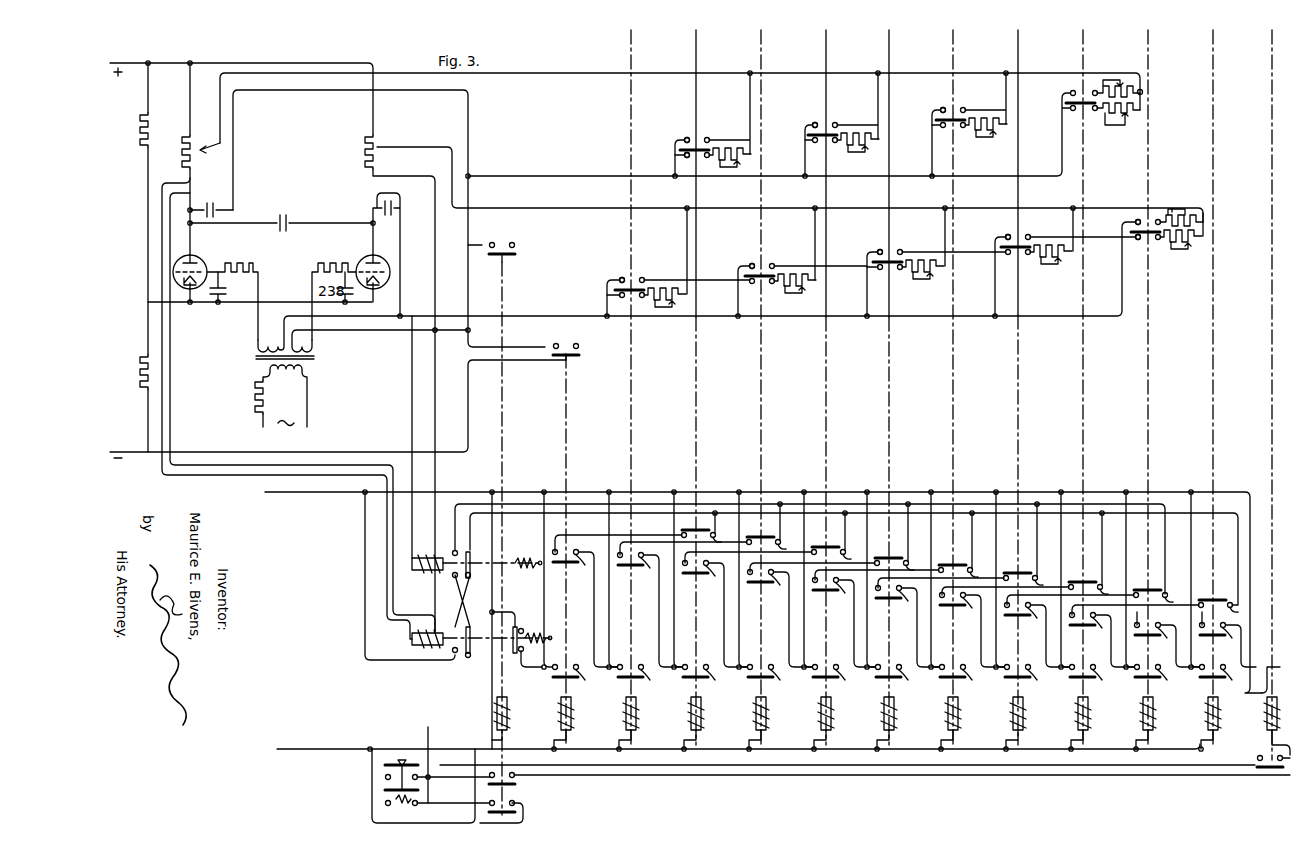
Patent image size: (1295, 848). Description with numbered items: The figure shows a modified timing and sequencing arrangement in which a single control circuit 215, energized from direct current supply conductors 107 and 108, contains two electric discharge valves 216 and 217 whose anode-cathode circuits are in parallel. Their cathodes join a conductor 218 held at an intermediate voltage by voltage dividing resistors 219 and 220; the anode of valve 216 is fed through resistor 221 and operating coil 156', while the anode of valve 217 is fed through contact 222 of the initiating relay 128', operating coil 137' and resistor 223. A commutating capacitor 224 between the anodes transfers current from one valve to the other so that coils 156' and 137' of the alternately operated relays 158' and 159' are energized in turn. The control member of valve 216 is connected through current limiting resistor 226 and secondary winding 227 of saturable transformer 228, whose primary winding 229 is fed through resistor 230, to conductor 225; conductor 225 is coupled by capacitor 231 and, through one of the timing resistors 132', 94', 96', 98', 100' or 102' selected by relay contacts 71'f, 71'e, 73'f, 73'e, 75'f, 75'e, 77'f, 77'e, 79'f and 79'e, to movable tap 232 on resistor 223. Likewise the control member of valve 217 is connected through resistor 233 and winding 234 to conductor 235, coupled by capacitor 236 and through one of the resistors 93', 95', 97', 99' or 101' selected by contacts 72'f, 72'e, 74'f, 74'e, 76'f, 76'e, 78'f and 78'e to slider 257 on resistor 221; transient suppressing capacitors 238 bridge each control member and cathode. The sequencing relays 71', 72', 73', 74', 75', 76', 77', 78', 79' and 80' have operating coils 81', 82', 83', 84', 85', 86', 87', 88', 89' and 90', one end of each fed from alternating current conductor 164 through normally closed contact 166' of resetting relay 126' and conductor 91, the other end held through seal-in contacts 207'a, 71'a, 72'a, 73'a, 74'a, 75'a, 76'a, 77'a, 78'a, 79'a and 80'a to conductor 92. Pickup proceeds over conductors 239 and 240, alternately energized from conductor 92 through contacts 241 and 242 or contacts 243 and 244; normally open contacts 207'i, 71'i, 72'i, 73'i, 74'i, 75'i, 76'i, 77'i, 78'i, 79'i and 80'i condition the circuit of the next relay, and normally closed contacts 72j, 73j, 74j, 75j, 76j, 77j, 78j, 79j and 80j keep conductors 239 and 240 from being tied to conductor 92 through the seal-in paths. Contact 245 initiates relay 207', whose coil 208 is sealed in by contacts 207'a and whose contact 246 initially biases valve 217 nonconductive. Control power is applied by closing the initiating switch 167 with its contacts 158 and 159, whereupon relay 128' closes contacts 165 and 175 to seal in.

The direct current control voltage supply conductor 107 is at (222, 70).
The direct current control voltage supply conductor 108 is at (196, 452).
The control circuit 215 is at (307, 180).
The electric discharge valve 216 is at (197, 260).
The electric discharge valve 217 is at (366, 260).
The conductor 218 is at (214, 306).
The voltage dividing resistor 219 is at (155, 128).
The voltage dividing resistor 220 is at (138, 372).
The resistor 221 is at (198, 160).
The normally open contact 222 is at (515, 246).
The resistor 223 is at (378, 157).
The commutating capacitor 224 is at (283, 231).
The conductor 225 is at (530, 316).
The current limiting resistor 226 is at (240, 262).
The secondary winding 227 is at (693, 287).
The transformer 228 is at (316, 357).
The primary winding 229 is at (290, 372).
The resistor 230 is at (258, 395).
The capacitor 231 is at (375, 206).
The movable tap 232 is at (378, 144).
The current limiting resistor 233 is at (330, 262).
The secondary winding 234 is at (306, 338).
The conductor 235 is at (568, 166).
The capacitor 236 is at (216, 213).
The transient suppressing capacitor 238 is at (226, 290).
The conductor 239 is at (590, 504).
The conductor 240 is at (652, 513).
The normally open contact 241 is at (452, 545).
The normally closed contact 242 is at (462, 663).
The normally closed contact 243 is at (470, 552).
The normally open contact 244 is at (452, 654).
The normally closed contact 245 is at (520, 626).
The normally closed contact 246 is at (580, 350).
The tap conductor 257 is at (214, 130).
The alternating current supply conductor 92 is at (300, 492).
The alternating current supply conductor 91 is at (590, 749).
The conductor 164 is at (318, 749).
The normally open contact 165 is at (514, 777).
The normally open contact 175 is at (514, 803).
The initiating switch 167 is at (400, 757).
The contact 158 is at (418, 785).
The contact 159 is at (418, 807).
The normally closed contact 166' is at (1266, 778).
The resetting relay 126' is at (1250, 395).
The initiating relay 128' is at (522, 538).
The relay 207' is at (587, 549).
The operating coil 208 is at (571, 714).
The operating coil 137' is at (420, 459).
The relay winding 156' is at (407, 645).
The contact blade 158' is at (483, 653).
The contact blade 159' is at (477, 600).
The resistor 132' is at (676, 257).
The sequencing relay 71' is at (647, 387).
The sequencing relay 72' is at (713, 531).
The sequencing relay 73' is at (777, 387).
The sequencing relay 74' is at (842, 531).
The sequencing relay 75' is at (905, 531).
The sequencing relay 76' is at (969, 387).
The sequencing relay 77' is at (1034, 530).
The sequencing relay 78' is at (1099, 387).
The sequencing relay 79' is at (1164, 387).
The sequencing relay 80' is at (1229, 387).
The operating coil 81' is at (640, 724).
The relay winding 82' is at (705, 724).
The relay winding 83' is at (770, 724).
The relay winding 84' is at (835, 724).
The relay winding 85' is at (898, 724).
The relay winding 86' is at (962, 724).
The relay winding 87' is at (1027, 724).
The relay winding 88' is at (1092, 724).
The relay winding 89' is at (1157, 724).
The relay winding 90' is at (1222, 724).
The resistor 93' is at (715, 120).
The resistor 94' is at (806, 250).
The resistor 95' is at (843, 112).
The resistor 96' is at (934, 243).
The resistor 97' is at (971, 105).
The resistor 98' is at (1061, 236).
The resistor 99' is at (1119, 121).
The resistor 100' is at (1169, 240).
The resistor 101' is at (1139, 88).
The resistor 102' is at (1189, 209).
The relay contact 71'f is at (603, 287).
The relay contact 71'e is at (596, 299).
The relay contact 72'f is at (667, 149).
The relay contact 72'e is at (664, 159).
The relay contact 73'f is at (732, 279).
The relay contact 73'e is at (725, 287).
The relay contact 74'f is at (796, 139).
The relay contact 74'e is at (791, 149).
The relay contact 75'f is at (860, 272).
The relay contact 75'e is at (853, 274).
The relay contact 76'f is at (923, 132).
The relay contact 76'e is at (918, 134).
The relay contact 77'f is at (988, 265).
The relay contact 77'e is at (982, 261).
The relay contact 78'f is at (1053, 83).
The relay contact 78'e is at (1060, 116).
The relay contact 79'f is at (1117, 212).
The relay contact 79'e is at (1115, 245).
The normally open contact 207'i is at (618, 601).
The sealing-in contact 207'a is at (575, 592).
The normally open i contact 71'i is at (683, 604).
The seal-in a contact 71'a is at (636, 592).
The normally open i contact 72'i is at (748, 609).
The seal-in a contact 72'a is at (701, 592).
The normally open i contact 73'i is at (812, 615).
The seal-in a contact 73'a is at (766, 592).
The normally open i contact 74'i is at (876, 618).
The seal-in a contact 74'a is at (831, 592).
The normally open i contact 75'i is at (940, 622).
The seal-in a contact 75'a is at (894, 592).
The normally open i contact 76'i is at (1005, 627).
The seal-in a contact 76'a is at (958, 592).
The normally open i contact 77'i is at (1070, 631).
The seal-in a contact 77'a is at (1023, 592).
The normally open i contact 78'i is at (1135, 636).
The seal-in a contact 78'a is at (1088, 592).
The normally open i contact 79'i is at (1167, 639).
The seal-in a contact 79'a is at (1153, 592).
The normally open i contact 80'i is at (1228, 639).
The seal-in a contact 80'a is at (1216, 592).
The normally closed j contact 72j is at (712, 527).
The normally closed j contact 73j is at (777, 526).
The normally closed j contact 74j is at (842, 536).
The normally closed j contact 75j is at (905, 537).
The normally closed j contact 76j is at (969, 545).
The normally closed j contact 77j is at (1034, 544).
The normally closed j contact 78j is at (1099, 553).
The normally closed j contact 79j is at (1164, 596).
The normally closed j contact 80j is at (1222, 600).